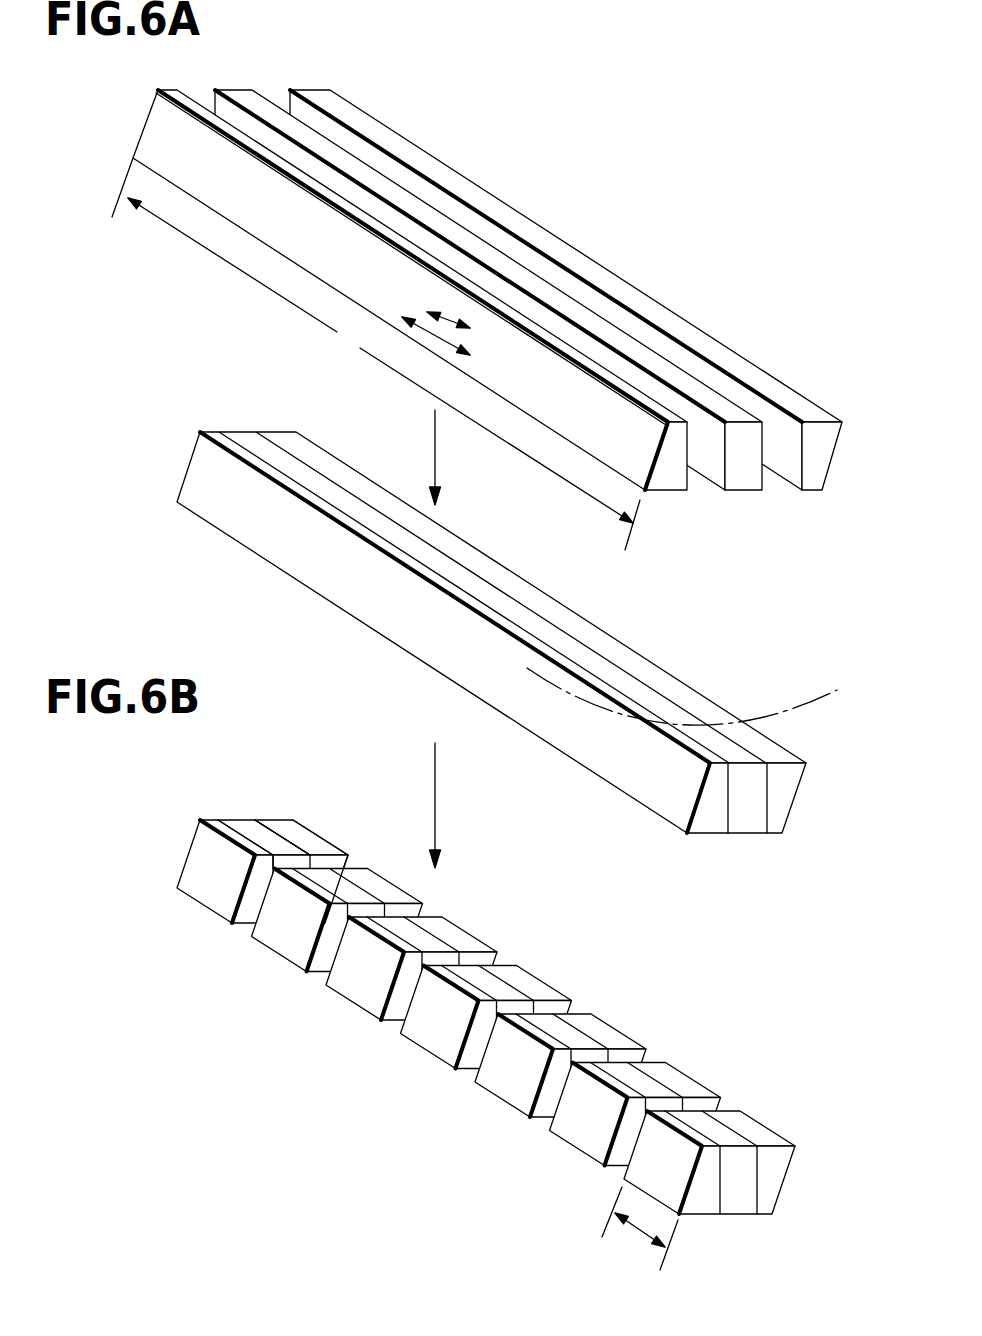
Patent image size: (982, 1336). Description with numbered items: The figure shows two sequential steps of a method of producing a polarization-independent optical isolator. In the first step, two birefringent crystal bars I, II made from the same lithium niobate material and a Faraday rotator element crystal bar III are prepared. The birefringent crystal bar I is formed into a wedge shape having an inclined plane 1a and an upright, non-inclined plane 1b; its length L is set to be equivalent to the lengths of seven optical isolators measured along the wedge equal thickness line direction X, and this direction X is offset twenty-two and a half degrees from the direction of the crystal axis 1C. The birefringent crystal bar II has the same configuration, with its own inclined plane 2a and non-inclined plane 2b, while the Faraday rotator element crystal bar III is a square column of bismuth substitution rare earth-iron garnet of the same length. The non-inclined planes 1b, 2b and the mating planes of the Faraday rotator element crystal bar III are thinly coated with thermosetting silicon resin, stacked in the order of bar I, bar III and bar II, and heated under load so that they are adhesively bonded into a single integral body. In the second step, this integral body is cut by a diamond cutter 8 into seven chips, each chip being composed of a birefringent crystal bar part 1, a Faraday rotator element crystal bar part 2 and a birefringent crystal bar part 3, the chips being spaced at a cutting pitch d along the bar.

In FIG. 6A, the birefringent crystal bar I is at (392, 374).
In FIG. 6A, the birefringent crystal bar II is at (566, 375).
In FIG. 6A, the Faraday rotator element crystal bar III is at (625, 685).
In FIG. 6A, the inclined plane 1a is at (310, 228).
In FIG. 6A, the non-inclined plane 1b is at (258, 138).
In FIG. 6A, the crystal axis 1C is at (447, 313).
In FIG. 6A, the inclined plane 2a is at (496, 190).
In FIG. 6A, the non-inclined plane 2b is at (355, 147).
In FIG. 6A, the diamond cutter 8 is at (785, 693).
In FIG. 6A, the length of the birefringent crystal bar L is at (376, 354).
In FIG. 6A, the wedge equal thickness line direction X is at (445, 338).
In FIG. 6B, the birefringent crystal bar part 1 is at (213, 818).
In FIG. 6B, the Faraday rotator element crystal bar part 2 is at (315, 840).
In FIG. 6B, the birefringent crystal bar part 3 is at (248, 827).
In FIG. 6B, the chip cutting pitch d is at (630, 1228).